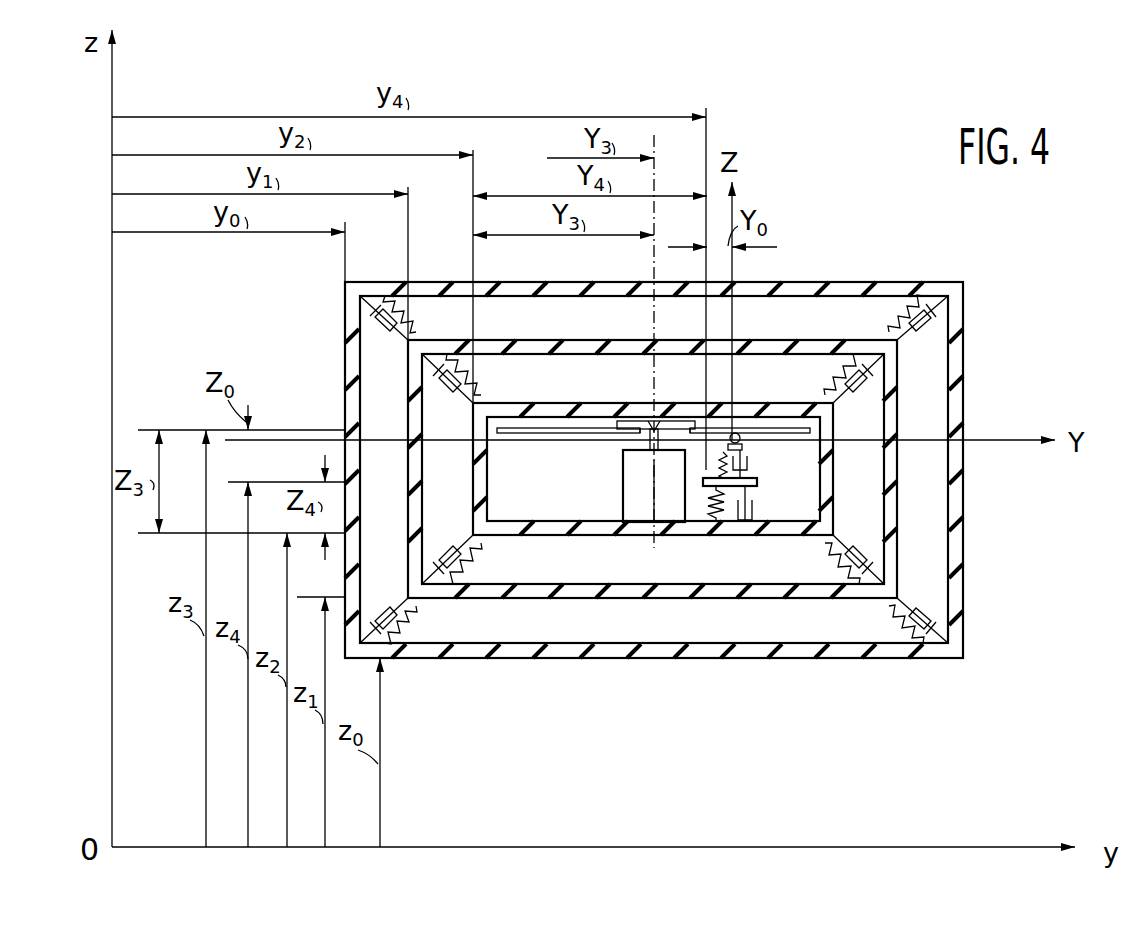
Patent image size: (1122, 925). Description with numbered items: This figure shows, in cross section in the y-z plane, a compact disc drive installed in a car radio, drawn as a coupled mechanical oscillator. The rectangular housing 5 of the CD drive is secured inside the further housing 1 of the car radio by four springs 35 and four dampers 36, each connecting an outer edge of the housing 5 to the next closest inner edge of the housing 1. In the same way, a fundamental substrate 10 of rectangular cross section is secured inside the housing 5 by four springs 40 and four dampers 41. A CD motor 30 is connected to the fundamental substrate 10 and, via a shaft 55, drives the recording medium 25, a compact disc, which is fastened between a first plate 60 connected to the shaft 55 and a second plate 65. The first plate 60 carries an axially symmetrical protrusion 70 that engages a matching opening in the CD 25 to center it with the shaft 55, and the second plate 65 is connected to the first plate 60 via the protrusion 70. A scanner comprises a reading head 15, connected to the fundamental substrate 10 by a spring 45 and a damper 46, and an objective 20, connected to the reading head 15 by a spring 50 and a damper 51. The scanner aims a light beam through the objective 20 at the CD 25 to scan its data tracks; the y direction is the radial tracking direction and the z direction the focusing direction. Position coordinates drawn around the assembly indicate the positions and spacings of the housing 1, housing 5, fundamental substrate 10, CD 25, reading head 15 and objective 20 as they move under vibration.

The further housing 1 is at (506, 658).
The housing 5 is at (628, 598).
The fundamental substrate 10 is at (576, 538).
The reading head 15 is at (756, 484).
The objective 20 is at (740, 434).
The recording medium 25 is at (738, 444).
The CD motor 30 is at (644, 508).
The springs 35 is at (888, 610).
The dampers 36 is at (922, 598).
The springs 40 is at (842, 548).
The dampers 41 is at (858, 514).
The spring 45 is at (712, 518).
The damper 46 is at (753, 520).
The spring 50 is at (700, 462).
The damper 51 is at (746, 466).
The shaft 55 is at (626, 448).
The first plate 60 is at (594, 434).
The second plate 65 is at (652, 422).
The protrusion 70 is at (664, 428).